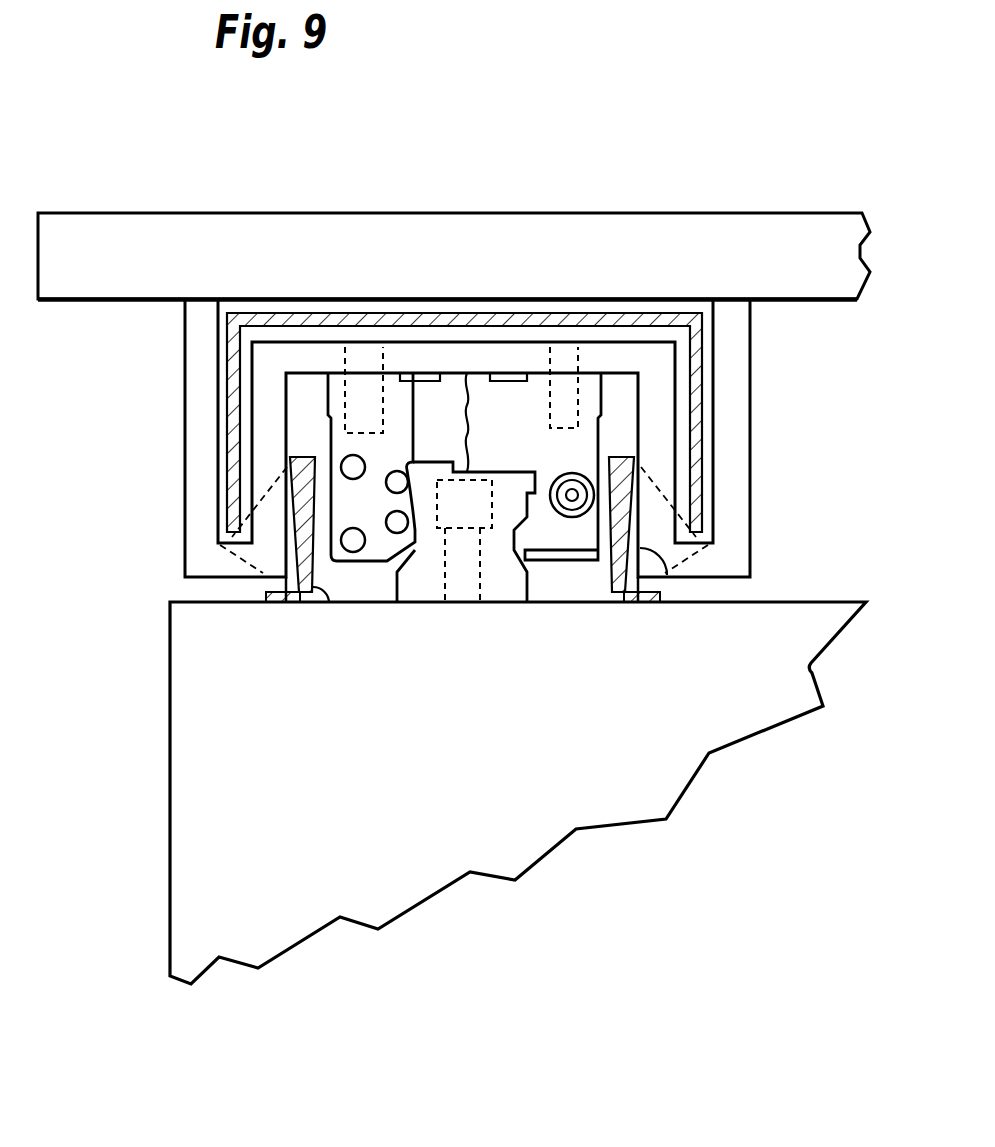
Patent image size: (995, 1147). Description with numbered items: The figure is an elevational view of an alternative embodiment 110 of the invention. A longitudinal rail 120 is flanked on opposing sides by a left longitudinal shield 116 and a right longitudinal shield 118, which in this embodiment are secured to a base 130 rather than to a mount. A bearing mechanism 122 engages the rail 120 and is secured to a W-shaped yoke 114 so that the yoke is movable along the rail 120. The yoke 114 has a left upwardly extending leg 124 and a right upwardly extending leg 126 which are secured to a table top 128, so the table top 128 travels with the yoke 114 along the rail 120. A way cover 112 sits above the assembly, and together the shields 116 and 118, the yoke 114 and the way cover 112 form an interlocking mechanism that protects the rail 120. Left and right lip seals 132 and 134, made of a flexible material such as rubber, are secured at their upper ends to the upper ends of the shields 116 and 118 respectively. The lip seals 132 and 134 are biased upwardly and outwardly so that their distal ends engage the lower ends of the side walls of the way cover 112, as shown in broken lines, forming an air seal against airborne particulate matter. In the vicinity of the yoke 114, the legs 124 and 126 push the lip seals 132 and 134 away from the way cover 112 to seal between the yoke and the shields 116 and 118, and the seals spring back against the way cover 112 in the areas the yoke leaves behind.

The embodiment 110 is at (152, 548).
The way cover 112 is at (470, 301).
The W-shaped yoke 114 is at (235, 592).
The left longitudinal shield 116 is at (318, 586).
The right longitudinal shield 118 is at (623, 604).
The longitudinal rail 120 is at (424, 588).
The bearing mechanism 122 is at (551, 562).
The left upwardly extending leg 124 is at (195, 322).
The right upwardly extending leg 126 is at (735, 333).
The table top 128 is at (672, 238).
The base 130 is at (468, 723).
The left lip seal 132 is at (287, 603).
The right lip seal 134 is at (670, 577).